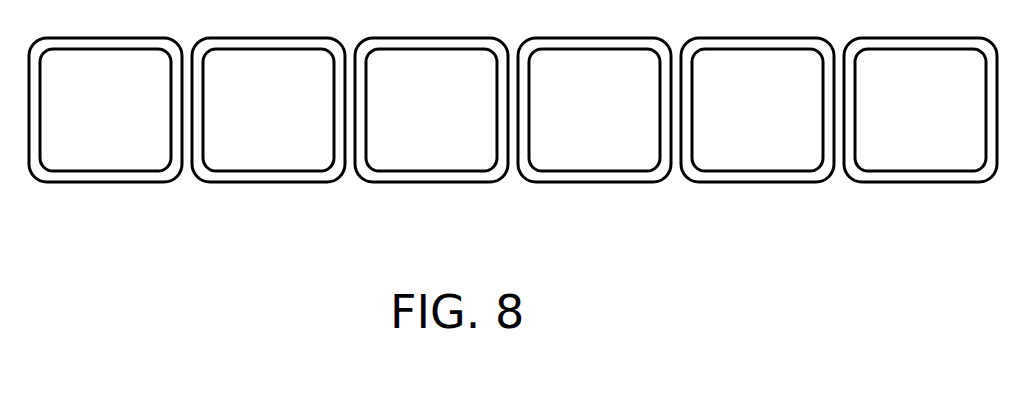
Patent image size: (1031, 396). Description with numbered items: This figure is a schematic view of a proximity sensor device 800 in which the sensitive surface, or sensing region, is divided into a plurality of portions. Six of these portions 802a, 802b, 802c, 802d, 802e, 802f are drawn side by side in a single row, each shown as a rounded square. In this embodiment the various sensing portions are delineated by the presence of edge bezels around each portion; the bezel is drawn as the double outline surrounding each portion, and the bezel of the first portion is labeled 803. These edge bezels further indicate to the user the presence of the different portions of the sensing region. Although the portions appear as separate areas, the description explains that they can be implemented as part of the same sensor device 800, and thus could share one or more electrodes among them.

The proximity sensor device 800 is at (492, 208).
The sensing portion 802a is at (105, 127).
The sensing portion 802b is at (268, 63).
The sensing portion 802c is at (447, 63).
The sensing portion 802d is at (608, 58).
The sensing portion 802e is at (760, 58).
The sensing portion 802f is at (924, 58).
The key outer edge 803 is at (117, 183).